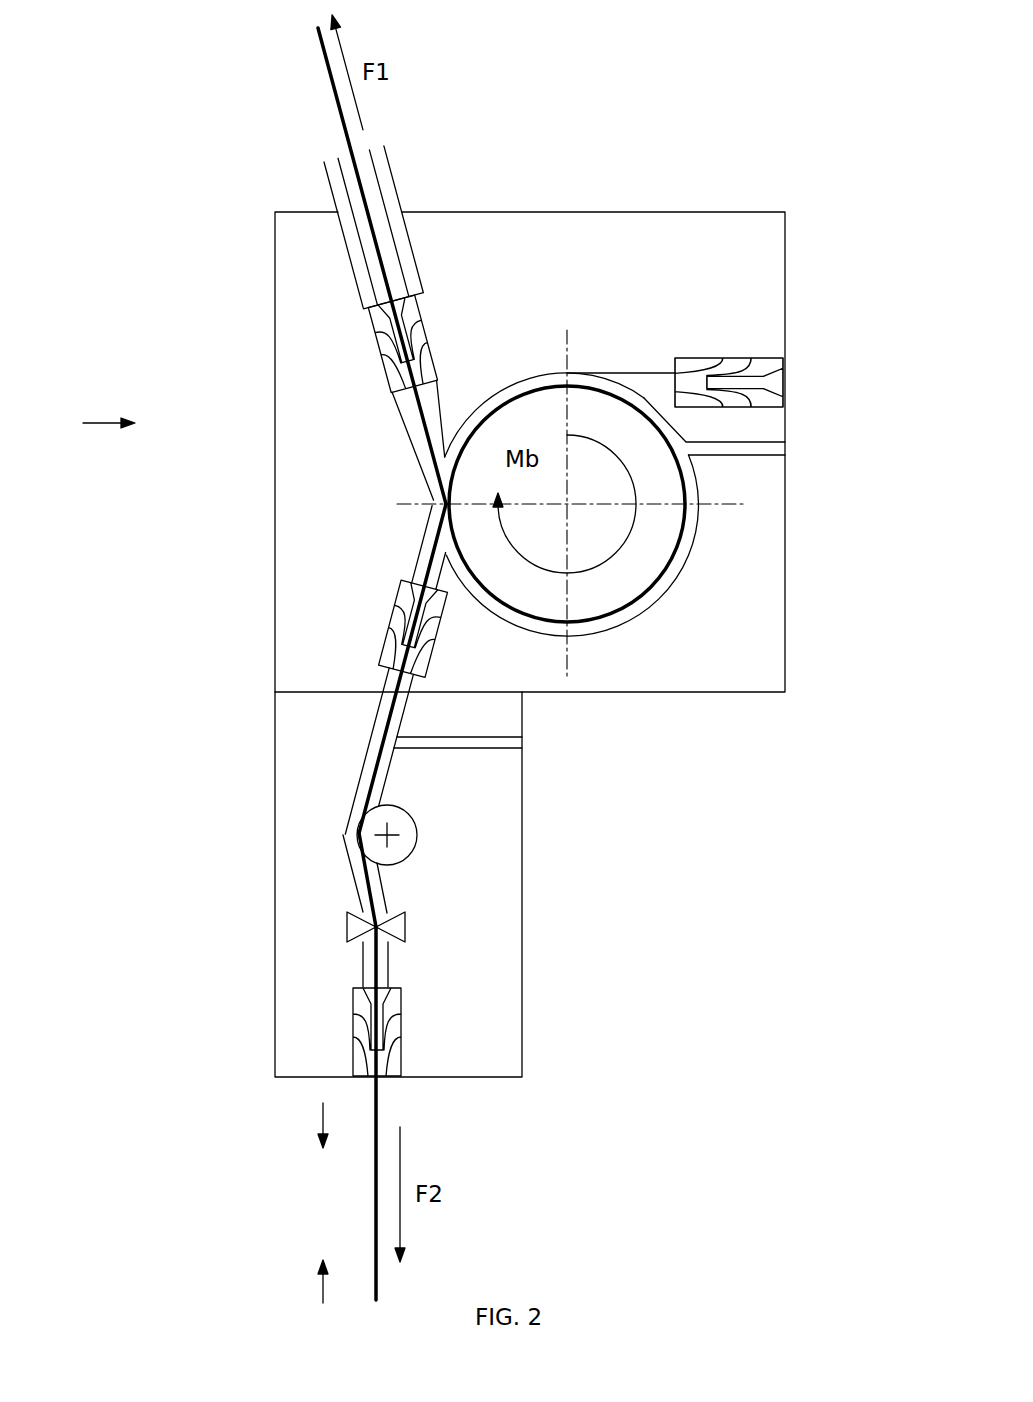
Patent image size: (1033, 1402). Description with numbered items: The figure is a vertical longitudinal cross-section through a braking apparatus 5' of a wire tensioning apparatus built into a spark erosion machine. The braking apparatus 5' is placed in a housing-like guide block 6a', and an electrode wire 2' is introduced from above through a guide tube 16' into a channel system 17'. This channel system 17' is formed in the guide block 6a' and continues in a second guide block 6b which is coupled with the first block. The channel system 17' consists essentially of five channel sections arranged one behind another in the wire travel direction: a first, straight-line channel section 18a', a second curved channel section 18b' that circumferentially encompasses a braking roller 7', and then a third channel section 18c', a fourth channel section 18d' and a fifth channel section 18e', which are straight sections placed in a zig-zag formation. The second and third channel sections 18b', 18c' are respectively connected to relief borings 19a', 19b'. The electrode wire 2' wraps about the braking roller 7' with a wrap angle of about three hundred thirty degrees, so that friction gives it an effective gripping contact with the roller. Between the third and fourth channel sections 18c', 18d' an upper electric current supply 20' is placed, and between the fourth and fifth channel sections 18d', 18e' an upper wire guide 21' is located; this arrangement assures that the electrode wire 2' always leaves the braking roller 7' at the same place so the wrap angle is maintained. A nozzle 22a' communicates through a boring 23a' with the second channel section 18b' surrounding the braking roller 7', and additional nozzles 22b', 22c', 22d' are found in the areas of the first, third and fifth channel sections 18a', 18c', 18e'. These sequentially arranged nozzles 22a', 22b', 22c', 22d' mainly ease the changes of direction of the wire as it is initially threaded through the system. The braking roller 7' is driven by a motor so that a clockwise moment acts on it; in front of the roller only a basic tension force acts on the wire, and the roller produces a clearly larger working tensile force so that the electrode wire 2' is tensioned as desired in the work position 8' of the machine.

The electrode wire 2' is at (415, 1144).
The braking apparatus 5' is at (95, 425).
The guide block 6a' is at (530, 425).
The guide block 6b is at (536, 872).
The braking roller 7' is at (571, 534).
The work position 8' is at (325, 1203).
The guide tube 16' is at (373, 227).
The channel system 17' is at (664, 504).
The first channel section 18a' is at (429, 441).
The second channel section 18b' is at (669, 528).
The third channel section 18c' is at (379, 754).
The fourth channel section 18d' is at (292, 894).
The fifth channel section 18e' is at (295, 986).
The relief boring 19a' is at (788, 476).
The relief boring 19b' is at (502, 737).
The upper electric current supply 20' is at (471, 826).
The upper wire guide 21' is at (466, 928).
The nozzle 22a' is at (773, 359).
The nozzle 22b' is at (402, 343).
The nozzle 22c' is at (413, 628).
The nozzle 22d' is at (454, 1052).
The boring 23a' is at (719, 333).